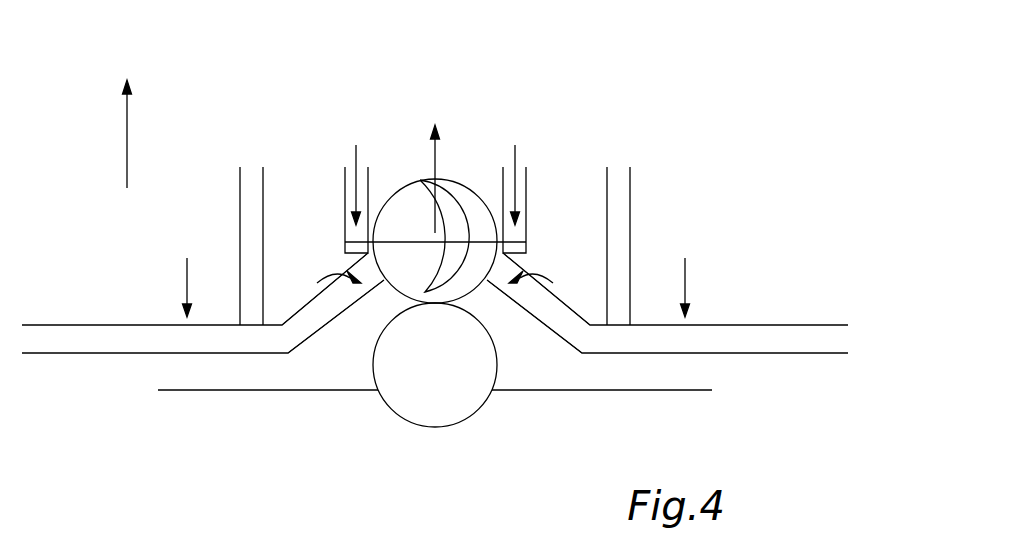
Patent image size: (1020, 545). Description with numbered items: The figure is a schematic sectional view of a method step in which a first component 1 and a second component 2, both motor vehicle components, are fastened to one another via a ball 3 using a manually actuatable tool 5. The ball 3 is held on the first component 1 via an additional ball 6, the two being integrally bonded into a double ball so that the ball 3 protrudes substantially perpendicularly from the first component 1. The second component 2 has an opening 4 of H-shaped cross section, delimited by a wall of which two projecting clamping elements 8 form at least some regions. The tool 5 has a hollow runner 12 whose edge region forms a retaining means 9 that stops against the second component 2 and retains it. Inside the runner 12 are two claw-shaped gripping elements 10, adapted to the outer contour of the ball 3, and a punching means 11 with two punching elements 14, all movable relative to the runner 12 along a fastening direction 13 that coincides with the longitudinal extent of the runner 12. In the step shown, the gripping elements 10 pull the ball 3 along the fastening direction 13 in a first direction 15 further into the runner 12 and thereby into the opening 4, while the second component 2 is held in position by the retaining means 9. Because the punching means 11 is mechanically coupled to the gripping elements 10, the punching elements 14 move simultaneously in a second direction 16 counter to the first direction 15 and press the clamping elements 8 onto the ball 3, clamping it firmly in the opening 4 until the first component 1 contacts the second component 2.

The first component 1 is at (600, 375).
The second component 2 is at (770, 343).
The ball 3 is at (475, 282).
The opening 4 is at (396, 152).
The tool 5 is at (684, 136).
The additional ball 6 is at (455, 415).
The clamping elements 8 is at (322, 298).
The retaining means 9 is at (630, 240).
The gripping elements 10 is at (461, 222).
The punching means 11 is at (527, 238).
The runner 12 is at (630, 190).
The fastening direction 13 is at (127, 145).
The punching elements 14 is at (345, 200).
The first direction 15 is at (435, 160).
The second direction 16 is at (356, 157).